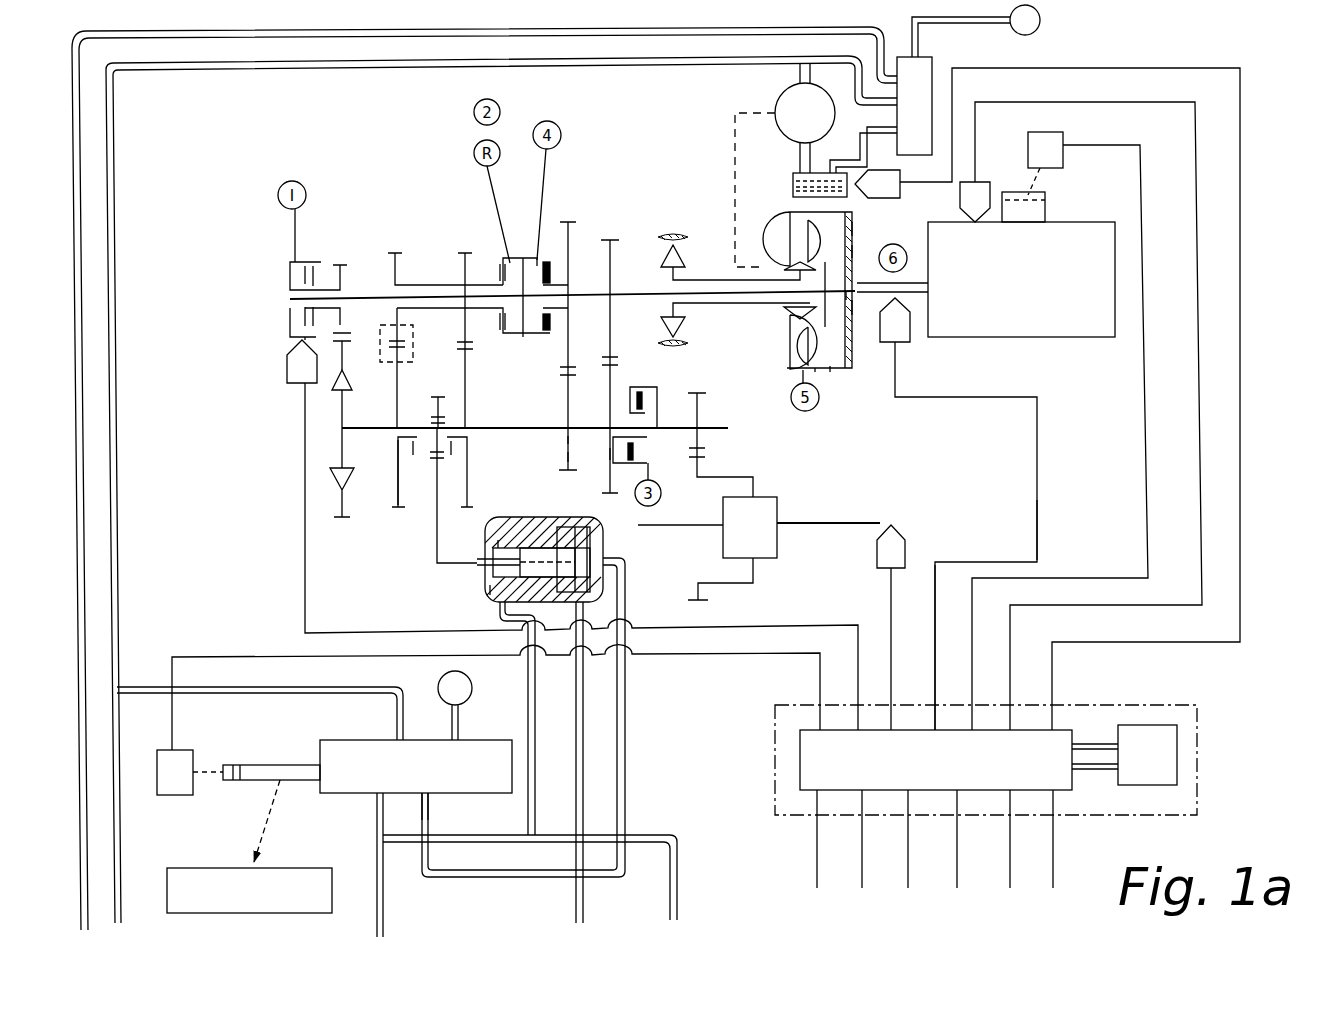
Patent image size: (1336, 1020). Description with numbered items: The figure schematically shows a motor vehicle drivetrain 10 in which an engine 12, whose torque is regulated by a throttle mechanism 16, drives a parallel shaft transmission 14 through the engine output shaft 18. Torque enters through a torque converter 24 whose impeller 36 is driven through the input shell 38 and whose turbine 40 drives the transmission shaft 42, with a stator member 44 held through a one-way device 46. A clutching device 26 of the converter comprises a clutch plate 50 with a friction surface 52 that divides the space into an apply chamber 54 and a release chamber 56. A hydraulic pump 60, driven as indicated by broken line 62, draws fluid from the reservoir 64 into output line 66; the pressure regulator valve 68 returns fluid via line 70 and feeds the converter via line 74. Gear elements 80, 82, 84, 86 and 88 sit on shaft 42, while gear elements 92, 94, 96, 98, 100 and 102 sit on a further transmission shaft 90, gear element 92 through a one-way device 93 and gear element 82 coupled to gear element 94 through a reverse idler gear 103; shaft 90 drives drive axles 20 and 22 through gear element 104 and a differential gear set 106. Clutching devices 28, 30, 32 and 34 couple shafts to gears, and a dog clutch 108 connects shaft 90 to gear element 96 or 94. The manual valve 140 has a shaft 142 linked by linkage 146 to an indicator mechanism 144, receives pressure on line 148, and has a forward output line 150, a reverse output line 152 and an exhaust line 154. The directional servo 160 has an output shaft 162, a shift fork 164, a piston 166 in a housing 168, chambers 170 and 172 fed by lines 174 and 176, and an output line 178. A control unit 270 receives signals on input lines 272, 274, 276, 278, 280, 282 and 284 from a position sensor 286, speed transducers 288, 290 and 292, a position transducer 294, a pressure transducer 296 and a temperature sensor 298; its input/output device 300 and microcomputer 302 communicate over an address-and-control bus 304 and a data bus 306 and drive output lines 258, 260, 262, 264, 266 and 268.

The motor vehicle drivetrain 10 is at (255, 150).
The engine 12 is at (1055, 322).
The parallel shaft transmission 14 is at (243, 302).
The throttle mechanism 16 is at (1047, 200).
The engine output shaft 18 is at (912, 285).
The drive axle 20 is at (665, 527).
The drive axle 22 is at (840, 523).
The torque converter 24 is at (717, 221).
The clutching device 26 is at (861, 228).
The clutching device 28 is at (288, 286).
The clutching device 30 is at (510, 262).
The clutching device 32 is at (648, 386).
The clutching device 34 is at (546, 258).
The impeller 36 is at (778, 237).
The input shell 38 is at (820, 372).
The turbine 40 is at (810, 342).
The transmission shaft 42 is at (646, 292).
The stator member 44 is at (805, 322).
The one-way device 46 is at (687, 262).
The clutch plate 50 is at (831, 372).
The friction surface 52 is at (848, 302).
The apply chamber 54 is at (856, 310).
The release chamber 56 is at (861, 254).
The hydraulic pump 60 is at (783, 96).
The broken line 62 is at (735, 128).
The fluid reservoir 64 is at (793, 183).
The pump output line 66 is at (623, 63).
The pressure regulator valve 68 is at (933, 68).
The return line 70 is at (870, 127).
The line 74 is at (344, 38).
The gear element 80 is at (342, 272).
The gear element 82 is at (402, 272).
The gear element 84 is at (461, 253).
The gear element 86 is at (572, 233).
The gear element 88 is at (610, 257).
The transmission shaft 90 is at (522, 427).
The gear element 92 is at (337, 475).
The one-way device 93 is at (348, 388).
The gear element 94 is at (398, 487).
The gear element 96 is at (568, 457).
The gear element 98 is at (570, 440).
The gear element 100 is at (610, 453).
The gear element 102 is at (699, 430).
The reverse idler gear 103 is at (415, 340).
The gear element 104 is at (700, 457).
The differential gear set 106 is at (785, 497).
The dog clutch 108 is at (437, 440).
The manual valve 140 is at (348, 750).
The shaft 142 is at (264, 766).
The indicator mechanism 144 is at (300, 869).
The mechanical linkage 146 is at (267, 822).
The line 148 is at (323, 690).
The forward output line 150 is at (376, 822).
The reverse output line 152 is at (430, 827).
The exhaust line 154 is at (463, 720).
The directional servo 160 is at (481, 579).
The output shaft 162 is at (497, 552).
The shift fork 164 is at (437, 543).
The piston 166 is at (534, 560).
The servo housing 168 is at (490, 588).
The chamber 170 is at (500, 547).
The chamber 172 is at (590, 537).
The line 174 is at (540, 740).
The line 176 is at (625, 732).
The output line 178 is at (585, 797).
The output line 258 is at (816, 841).
The output line 260 is at (862, 862).
The output line 262 is at (909, 861).
The output line 264 is at (958, 878).
The output line 266 is at (1010, 870).
The output line 268 is at (1054, 860).
The control unit 270 is at (1204, 757).
The input line 272 is at (817, 662).
The input line 274 is at (815, 627).
The input line 276 is at (895, 588).
The input line 278 is at (1038, 531).
The input line 280 is at (1146, 442).
The input line 282 is at (1200, 440).
The input line 284 is at (1242, 601).
The position sensor 286 is at (191, 786).
The speed transducer 288 is at (287, 383).
The speed transducer 290 is at (905, 540).
The speed transducer 292 is at (902, 352).
The position transducer 294 is at (1065, 136).
The pressure transducer 296 is at (987, 186).
The temperature sensor 298 is at (900, 178).
The input/output device 300 is at (806, 753).
The microcomputer 302 is at (1163, 729).
The address-and-control bus 304 is at (1093, 742).
The bidirectional data bus 306 is at (1100, 771).